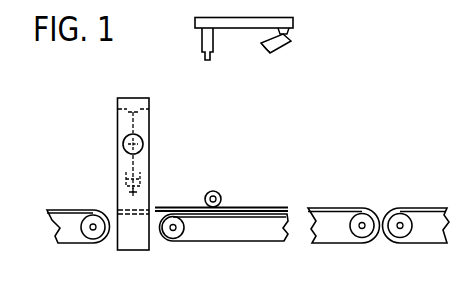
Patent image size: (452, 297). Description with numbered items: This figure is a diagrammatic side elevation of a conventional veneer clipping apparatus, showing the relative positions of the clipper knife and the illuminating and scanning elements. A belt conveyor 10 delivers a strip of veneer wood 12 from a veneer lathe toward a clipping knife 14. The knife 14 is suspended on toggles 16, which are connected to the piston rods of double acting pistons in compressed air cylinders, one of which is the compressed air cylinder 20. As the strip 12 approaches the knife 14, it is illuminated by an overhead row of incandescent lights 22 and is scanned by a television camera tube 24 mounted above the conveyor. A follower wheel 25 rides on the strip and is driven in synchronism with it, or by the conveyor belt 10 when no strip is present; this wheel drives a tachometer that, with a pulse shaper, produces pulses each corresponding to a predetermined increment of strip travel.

The belt conveyor 10 is at (233, 219).
The strip of veneer wood 12 is at (233, 208).
The clipping knife 14 is at (150, 190).
The toggles 16 is at (138, 128).
The compressed air cylinder 20 is at (143, 144).
The incandescent lights 22 is at (289, 44).
The television camera tube 24 is at (202, 42).
The follower wheel 25 is at (214, 191).